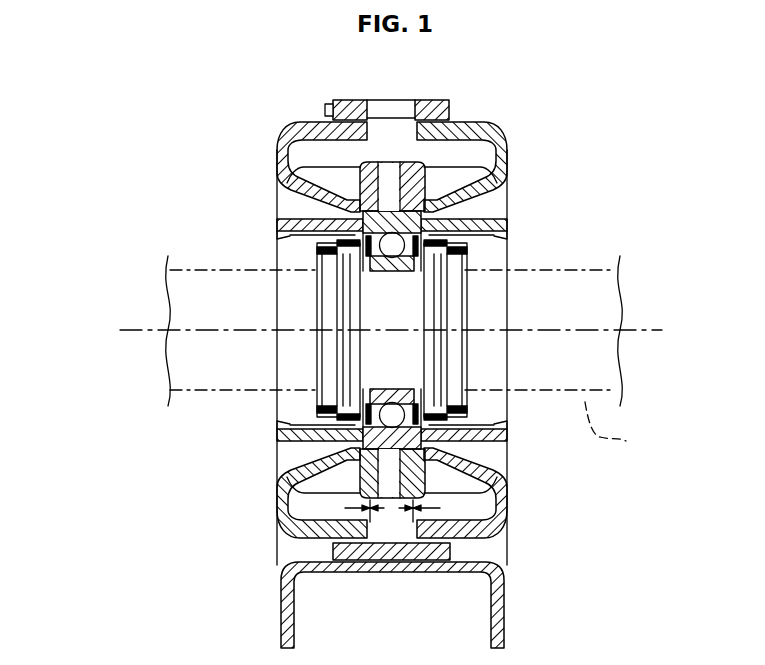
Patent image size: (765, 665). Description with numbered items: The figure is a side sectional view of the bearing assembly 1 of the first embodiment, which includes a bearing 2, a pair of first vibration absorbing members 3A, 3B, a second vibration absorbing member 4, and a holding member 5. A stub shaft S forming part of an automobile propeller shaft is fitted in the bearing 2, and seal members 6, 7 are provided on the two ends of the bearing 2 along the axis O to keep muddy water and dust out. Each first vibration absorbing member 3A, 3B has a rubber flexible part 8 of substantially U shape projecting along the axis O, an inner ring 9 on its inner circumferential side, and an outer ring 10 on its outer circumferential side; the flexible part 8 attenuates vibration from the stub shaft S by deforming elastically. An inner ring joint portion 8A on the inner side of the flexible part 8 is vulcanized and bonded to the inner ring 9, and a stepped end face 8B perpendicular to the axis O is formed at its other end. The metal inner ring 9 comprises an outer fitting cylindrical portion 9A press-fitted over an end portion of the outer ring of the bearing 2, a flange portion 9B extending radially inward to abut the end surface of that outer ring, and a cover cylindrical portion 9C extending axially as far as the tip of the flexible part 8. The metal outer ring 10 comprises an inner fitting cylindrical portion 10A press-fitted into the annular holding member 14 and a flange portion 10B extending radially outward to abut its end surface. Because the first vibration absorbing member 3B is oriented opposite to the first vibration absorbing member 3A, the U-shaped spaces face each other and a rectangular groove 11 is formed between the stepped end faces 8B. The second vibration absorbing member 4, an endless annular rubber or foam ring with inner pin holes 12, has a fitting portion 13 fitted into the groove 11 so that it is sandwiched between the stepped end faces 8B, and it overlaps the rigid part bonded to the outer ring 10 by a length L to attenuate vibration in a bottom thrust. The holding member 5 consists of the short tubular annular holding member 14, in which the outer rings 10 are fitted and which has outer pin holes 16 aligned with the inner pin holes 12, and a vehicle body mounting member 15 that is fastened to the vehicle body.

The bearing assembly 1 is at (126, 126).
The bearing 2 is at (335, 383).
The first vibration absorbing member 3A is at (268, 134).
The first vibration absorbing member 3B is at (512, 133).
The second vibration absorbing member 4 is at (497, 181).
The holding member 5 is at (331, 102).
The seal member 6 is at (281, 431).
The seal member 7 is at (466, 412).
The flexible part 8 is at (279, 151).
The inner ring joint portion 8A is at (326, 218).
The stepped end face 8B is at (322, 191).
The inner ring 9 is at (496, 233).
The outer fitting cylindrical portion 9A is at (336, 251).
The flange portion 9B is at (322, 244).
The cover cylindrical portion 9C is at (281, 238).
The outer ring 10 is at (455, 120).
The inner fitting cylindrical portion 10A is at (346, 100).
The flange portion 10B is at (328, 110).
The rectangular groove 11 is at (388, 200).
The inner pin hole 12 is at (458, 147).
The fitting portion 13 is at (287, 486).
The annular holding member 14 is at (391, 551).
The vehicle body mounting member 15 is at (505, 609).
The outer pin hole 16 is at (417, 102).
The overlap length L is at (357, 521).
The axis O is at (404, 330).
The stub shaft S is at (618, 440).